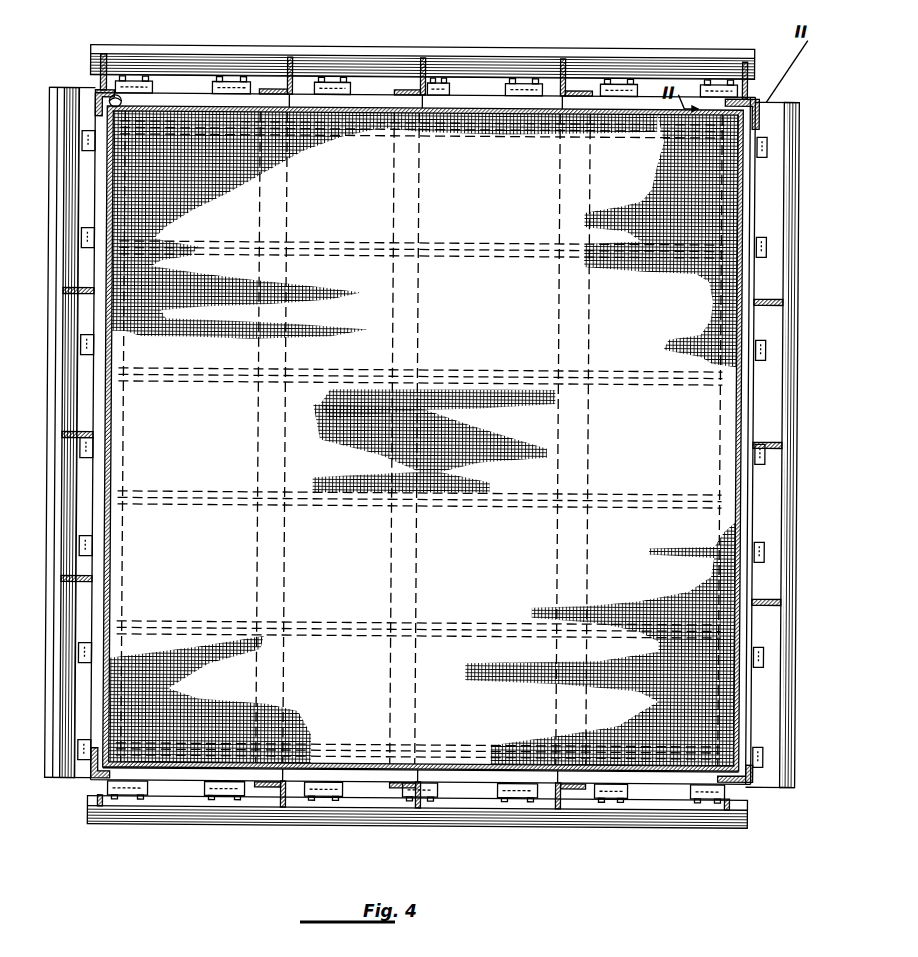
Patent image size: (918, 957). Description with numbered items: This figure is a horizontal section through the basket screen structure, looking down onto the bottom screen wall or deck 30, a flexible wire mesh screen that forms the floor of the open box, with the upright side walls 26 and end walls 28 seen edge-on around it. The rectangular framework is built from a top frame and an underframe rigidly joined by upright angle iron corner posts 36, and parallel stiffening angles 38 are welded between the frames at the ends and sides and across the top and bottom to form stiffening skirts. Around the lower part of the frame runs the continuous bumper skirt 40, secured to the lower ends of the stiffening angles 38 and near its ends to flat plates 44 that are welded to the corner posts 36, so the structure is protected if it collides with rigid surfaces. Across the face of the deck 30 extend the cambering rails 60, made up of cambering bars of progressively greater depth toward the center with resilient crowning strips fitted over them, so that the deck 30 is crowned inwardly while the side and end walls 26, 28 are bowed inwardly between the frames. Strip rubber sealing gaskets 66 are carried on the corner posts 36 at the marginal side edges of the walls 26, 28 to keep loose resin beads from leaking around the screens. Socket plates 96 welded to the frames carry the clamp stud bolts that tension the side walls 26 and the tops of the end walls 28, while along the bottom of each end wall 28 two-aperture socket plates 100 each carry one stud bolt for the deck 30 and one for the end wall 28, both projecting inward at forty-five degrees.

The side wall 26 is at (110, 403).
The end wall 28 is at (488, 120).
The bottom screen wall or deck 30 is at (468, 314).
The corner post 36 is at (102, 90).
The stiffening angle 38 is at (289, 60).
The bumper skirt 40 is at (83, 52).
The flat plate 44 is at (93, 92).
The cambering rail 60 is at (613, 236).
The sealing gasket 66 is at (122, 100).
The socket plate 96 is at (766, 147).
The socket plate 100 is at (138, 82).